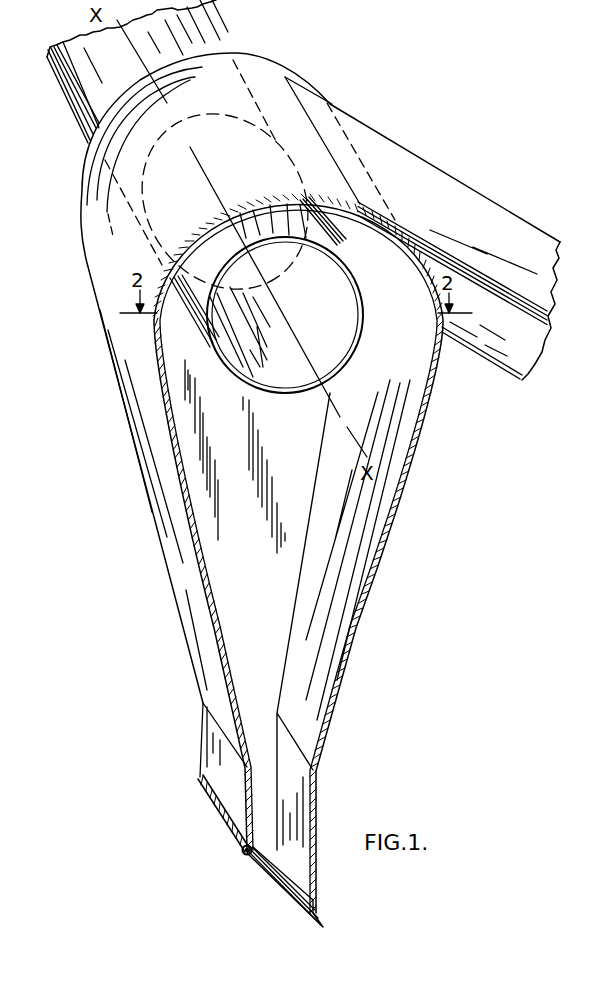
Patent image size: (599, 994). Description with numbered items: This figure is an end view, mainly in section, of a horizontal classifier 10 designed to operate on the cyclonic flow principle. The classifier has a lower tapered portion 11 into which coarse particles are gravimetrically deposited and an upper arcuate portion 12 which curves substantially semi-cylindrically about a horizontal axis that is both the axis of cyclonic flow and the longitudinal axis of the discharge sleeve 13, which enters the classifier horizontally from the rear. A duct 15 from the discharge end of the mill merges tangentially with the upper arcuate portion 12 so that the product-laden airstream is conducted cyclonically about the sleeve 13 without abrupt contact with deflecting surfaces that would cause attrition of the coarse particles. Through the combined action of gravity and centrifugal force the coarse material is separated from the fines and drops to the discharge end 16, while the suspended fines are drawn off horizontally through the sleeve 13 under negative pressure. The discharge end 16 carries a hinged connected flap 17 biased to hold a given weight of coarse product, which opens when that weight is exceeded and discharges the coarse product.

The horizontal classifier 10 is at (407, 522).
The lower tapered portion 11 is at (153, 513).
The upper arcuate portion 12 is at (90, 213).
The discharge sleeve 13 is at (229, 48).
The duct 15 is at (478, 222).
The discharge end 16 is at (290, 810).
The hinged connected flap 17 is at (270, 877).